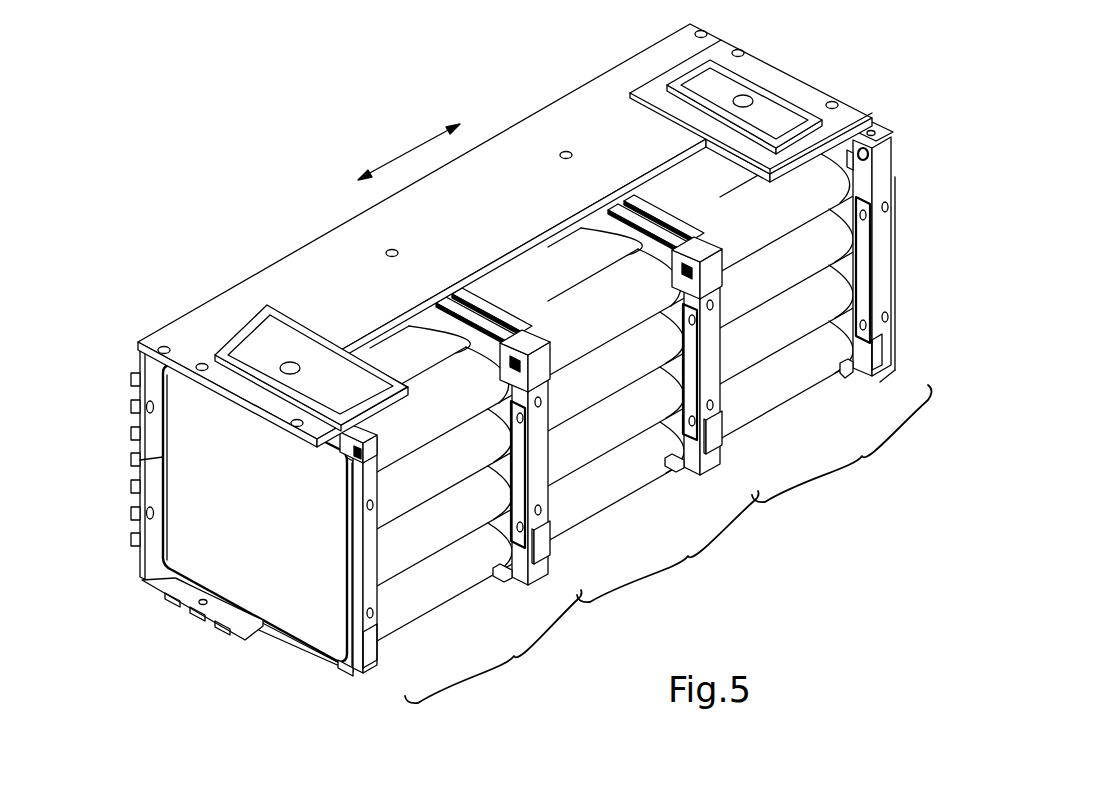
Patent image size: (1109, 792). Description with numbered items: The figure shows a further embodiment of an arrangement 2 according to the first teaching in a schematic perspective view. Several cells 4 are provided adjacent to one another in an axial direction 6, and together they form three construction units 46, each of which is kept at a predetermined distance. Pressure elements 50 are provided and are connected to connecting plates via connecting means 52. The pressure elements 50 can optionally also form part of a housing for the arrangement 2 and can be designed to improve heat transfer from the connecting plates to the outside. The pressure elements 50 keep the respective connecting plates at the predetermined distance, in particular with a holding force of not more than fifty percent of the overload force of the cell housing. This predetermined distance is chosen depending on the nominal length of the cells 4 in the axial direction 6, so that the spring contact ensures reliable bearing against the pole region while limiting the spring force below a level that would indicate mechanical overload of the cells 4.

The arrangement 2 is at (482, 350).
The cell 4 is at (795, 390).
The axial direction 6 is at (412, 152).
The construction unit 46 is at (668, 544).
The pressure element 50 is at (273, 278).
The connecting means 52 is at (562, 150).